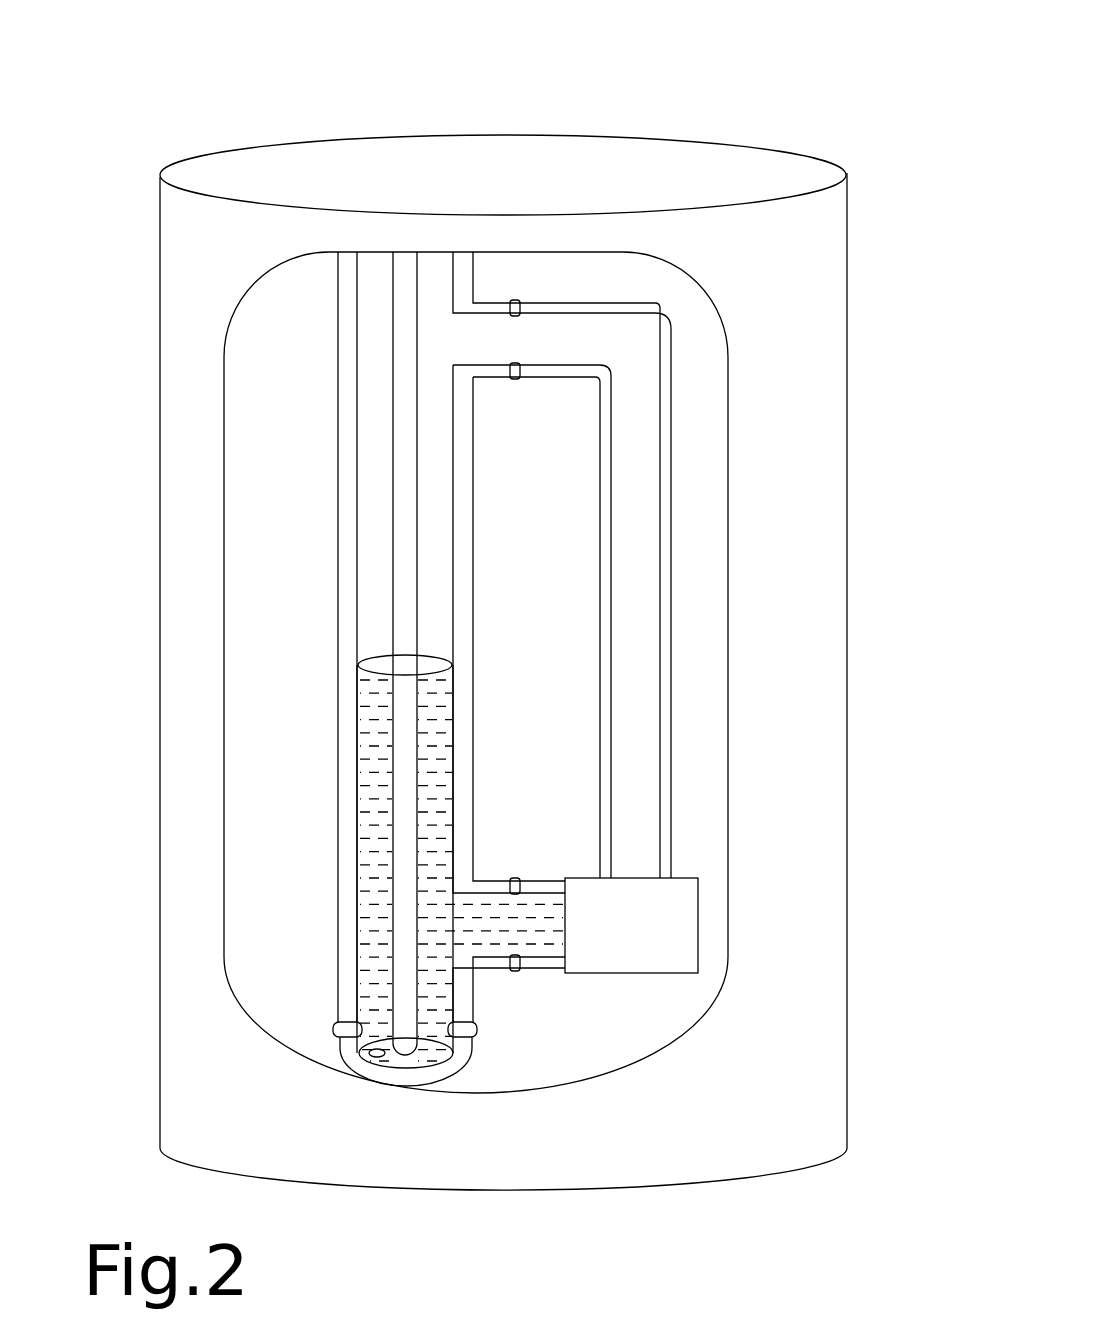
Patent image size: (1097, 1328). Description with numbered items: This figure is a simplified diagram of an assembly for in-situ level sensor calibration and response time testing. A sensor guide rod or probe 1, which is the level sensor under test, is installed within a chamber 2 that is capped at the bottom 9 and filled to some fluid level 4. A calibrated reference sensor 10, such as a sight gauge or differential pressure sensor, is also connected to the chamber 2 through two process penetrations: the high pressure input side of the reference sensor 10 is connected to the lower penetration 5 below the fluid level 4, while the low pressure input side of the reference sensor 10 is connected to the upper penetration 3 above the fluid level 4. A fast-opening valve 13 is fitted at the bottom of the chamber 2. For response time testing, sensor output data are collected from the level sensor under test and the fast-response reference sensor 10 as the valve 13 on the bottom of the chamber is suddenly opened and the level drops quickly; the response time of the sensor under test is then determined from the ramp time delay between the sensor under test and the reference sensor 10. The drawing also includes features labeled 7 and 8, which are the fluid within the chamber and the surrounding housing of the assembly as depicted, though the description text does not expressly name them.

The sensor guide rod or probe 1 is at (408, 294).
The chamber 2 is at (338, 437).
The upper penetration 3 is at (490, 303).
The fluid level 4 is at (380, 665).
The lower penetration 5 is at (491, 880).
The liquid 7 is at (373, 810).
The housing 8 is at (847, 222).
The bottom 9 is at (395, 1075).
The calibrated reference sensor 10 is at (640, 918).
The valve 13 is at (370, 1052).